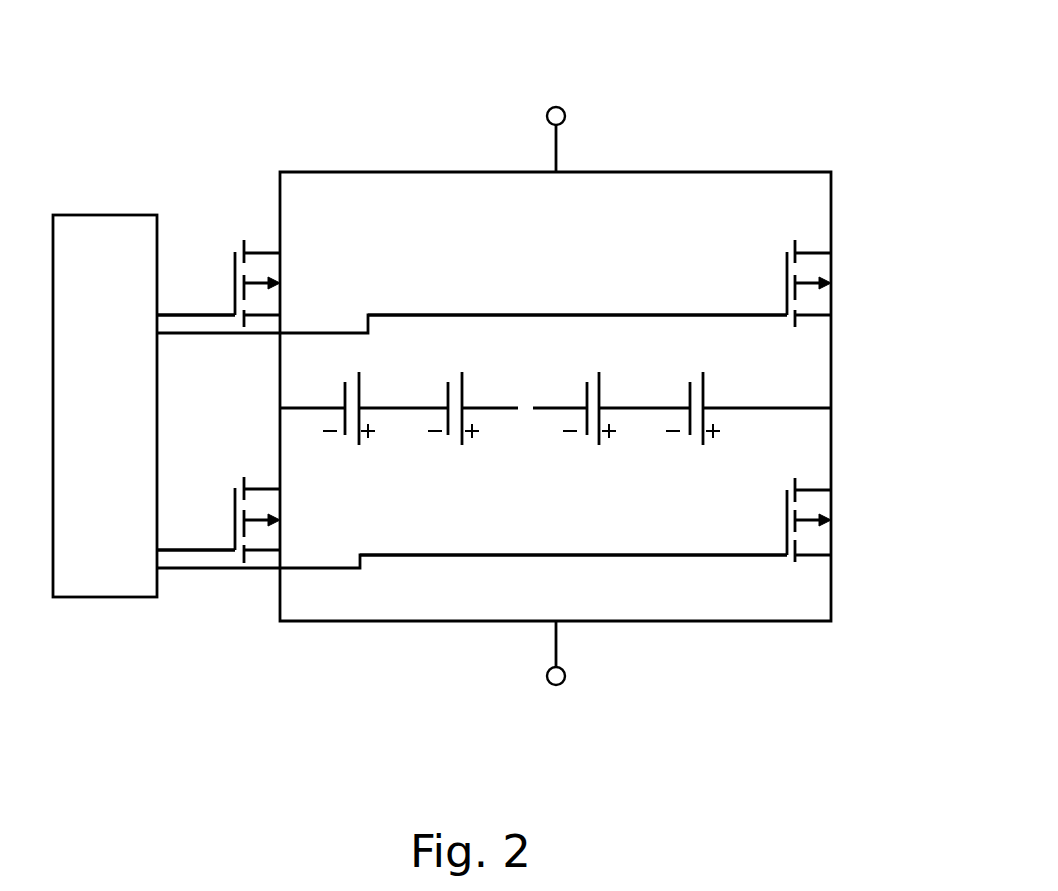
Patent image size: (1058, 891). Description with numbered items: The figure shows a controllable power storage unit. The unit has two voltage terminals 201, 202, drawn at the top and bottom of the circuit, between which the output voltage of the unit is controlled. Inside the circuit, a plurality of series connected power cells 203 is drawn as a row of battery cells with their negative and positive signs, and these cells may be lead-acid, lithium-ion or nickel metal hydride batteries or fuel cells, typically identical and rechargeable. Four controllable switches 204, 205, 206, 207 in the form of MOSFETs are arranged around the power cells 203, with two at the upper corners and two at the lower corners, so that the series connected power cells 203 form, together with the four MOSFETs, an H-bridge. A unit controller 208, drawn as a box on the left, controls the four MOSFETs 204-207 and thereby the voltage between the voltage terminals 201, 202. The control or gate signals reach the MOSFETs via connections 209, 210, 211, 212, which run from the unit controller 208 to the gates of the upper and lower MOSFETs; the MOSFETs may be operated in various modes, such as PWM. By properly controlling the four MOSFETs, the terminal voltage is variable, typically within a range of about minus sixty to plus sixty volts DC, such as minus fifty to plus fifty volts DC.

The voltage terminal 201 is at (556, 107).
The voltage terminal 202 is at (557, 685).
The series connected power cells 203 is at (718, 457).
The controllable switch 204 is at (275, 263).
The controllable switch 205 is at (827, 267).
The controllable switch 206 is at (268, 505).
The controllable switch 207 is at (818, 503).
The unit controller 208 is at (100, 580).
The connection 209 is at (170, 333).
The connection 210 is at (557, 315).
The connection 211 is at (170, 568).
The connection 212 is at (555, 555).